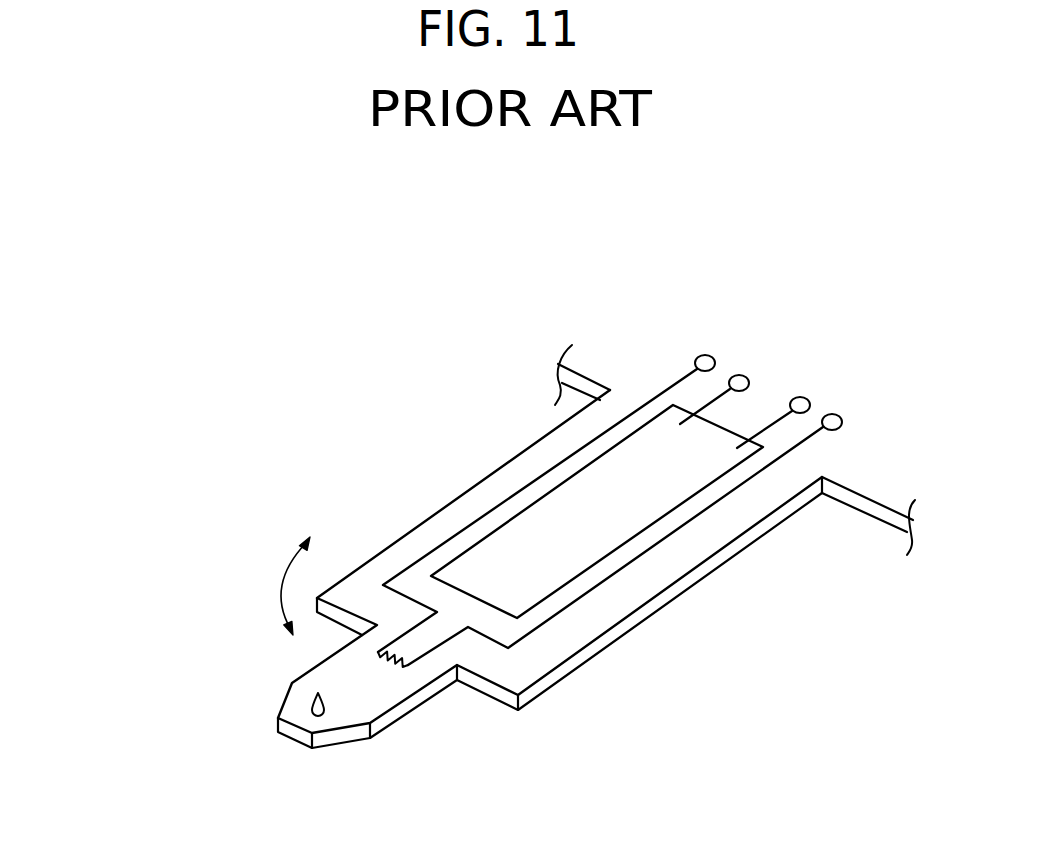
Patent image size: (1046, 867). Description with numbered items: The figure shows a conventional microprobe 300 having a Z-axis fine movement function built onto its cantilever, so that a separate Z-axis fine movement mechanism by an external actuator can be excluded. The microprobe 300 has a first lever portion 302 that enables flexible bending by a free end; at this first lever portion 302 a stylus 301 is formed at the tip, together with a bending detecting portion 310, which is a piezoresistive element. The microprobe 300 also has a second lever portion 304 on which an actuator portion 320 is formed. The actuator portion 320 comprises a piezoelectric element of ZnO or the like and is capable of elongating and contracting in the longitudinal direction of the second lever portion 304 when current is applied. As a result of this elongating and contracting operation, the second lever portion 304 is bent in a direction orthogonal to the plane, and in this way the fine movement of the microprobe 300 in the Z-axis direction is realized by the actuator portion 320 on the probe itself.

The microprobe 300 is at (377, 423).
The probe tip 301 is at (305, 706).
The first lever portion 302 is at (427, 807).
The second lever portion 304 is at (840, 518).
The bending detecting portion 310 is at (398, 670).
The actuator portion 320 is at (502, 543).